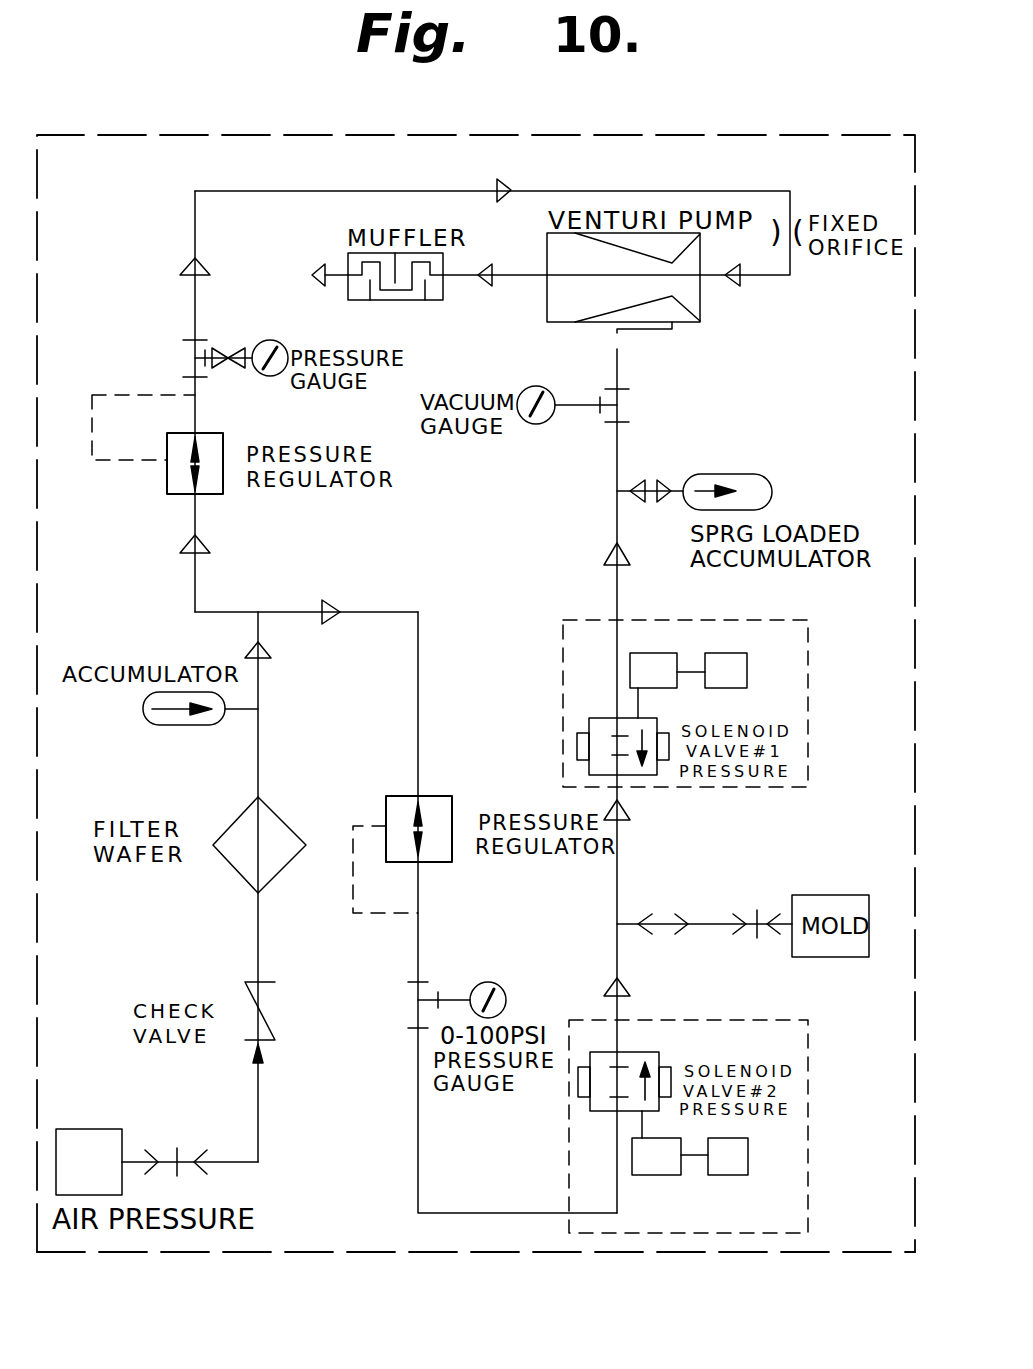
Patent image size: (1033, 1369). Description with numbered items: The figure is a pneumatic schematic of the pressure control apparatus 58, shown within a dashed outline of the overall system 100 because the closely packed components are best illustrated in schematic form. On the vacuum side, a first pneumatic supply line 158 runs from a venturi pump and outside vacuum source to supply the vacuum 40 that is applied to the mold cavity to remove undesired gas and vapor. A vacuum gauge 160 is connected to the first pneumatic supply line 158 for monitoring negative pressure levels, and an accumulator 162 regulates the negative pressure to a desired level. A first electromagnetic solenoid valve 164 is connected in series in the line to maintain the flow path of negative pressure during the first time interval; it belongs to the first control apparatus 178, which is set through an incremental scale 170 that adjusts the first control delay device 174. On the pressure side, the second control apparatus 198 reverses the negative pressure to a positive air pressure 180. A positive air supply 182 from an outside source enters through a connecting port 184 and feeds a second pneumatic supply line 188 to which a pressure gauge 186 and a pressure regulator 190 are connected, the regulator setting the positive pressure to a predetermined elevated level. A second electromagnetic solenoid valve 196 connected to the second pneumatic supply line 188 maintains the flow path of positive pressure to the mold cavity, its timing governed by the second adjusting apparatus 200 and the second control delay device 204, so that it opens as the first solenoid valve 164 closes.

The pneumatic control system 100 is at (95, 200).
The control apparatus 58 is at (465, 1253).
The vacuum 40 is at (622, 338).
The first pneumatic supply line 158 is at (619, 443).
The vacuum gauge 160 is at (543, 426).
The accumulator 162 is at (210, 728).
The first electromagnetic solenoid valve 164 is at (588, 728).
The incremental scale 170 is at (730, 682).
The first control delay device 174 is at (653, 675).
The first control apparatus 178 is at (806, 661).
The positive air pressure 180 is at (330, 605).
The positive air supply 182 is at (85, 1127).
The connecting port 184 is at (178, 1155).
The pressure gauge 186 is at (485, 981).
The second pneumatic supply line 188 is at (617, 1005).
The pressure regulator 190 is at (400, 793).
The second electromagnetic solenoid valve 196 is at (607, 1113).
The second control apparatus 198 is at (808, 1086).
The second adjusting apparatus 200 is at (730, 1153).
The second control delay device 204 is at (655, 1146).